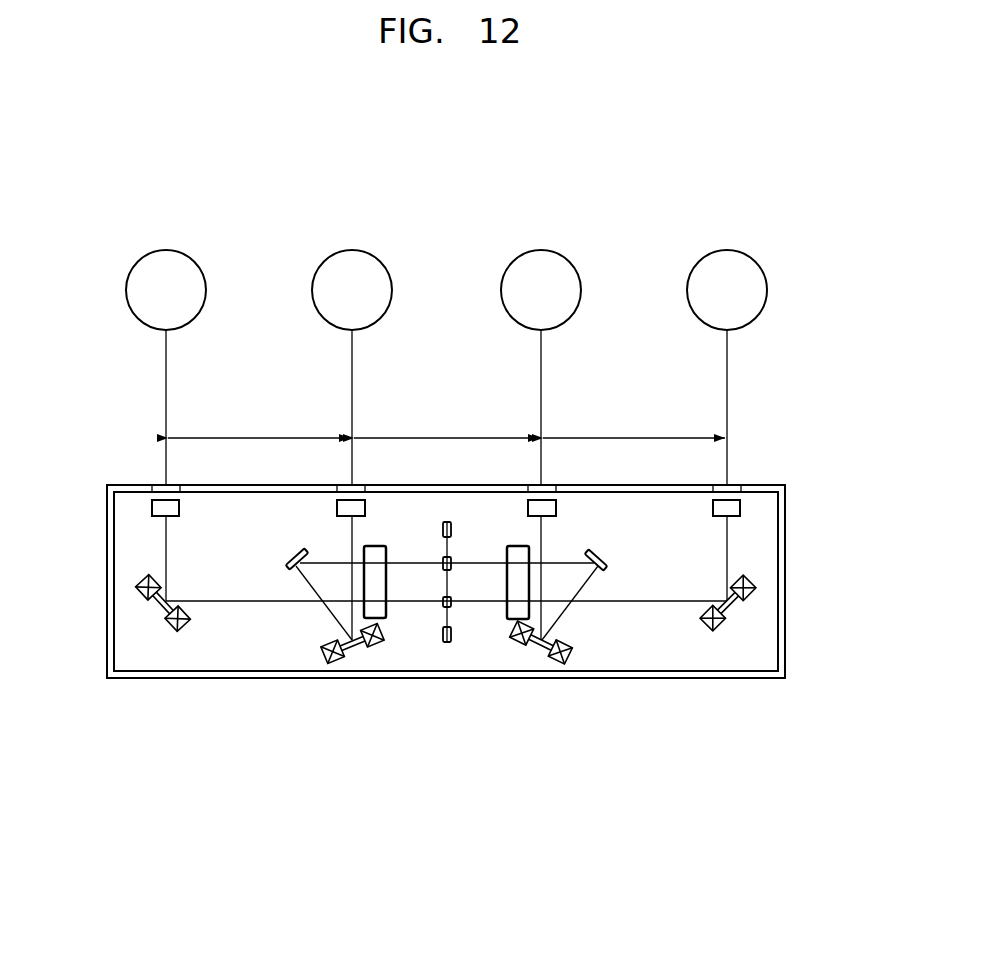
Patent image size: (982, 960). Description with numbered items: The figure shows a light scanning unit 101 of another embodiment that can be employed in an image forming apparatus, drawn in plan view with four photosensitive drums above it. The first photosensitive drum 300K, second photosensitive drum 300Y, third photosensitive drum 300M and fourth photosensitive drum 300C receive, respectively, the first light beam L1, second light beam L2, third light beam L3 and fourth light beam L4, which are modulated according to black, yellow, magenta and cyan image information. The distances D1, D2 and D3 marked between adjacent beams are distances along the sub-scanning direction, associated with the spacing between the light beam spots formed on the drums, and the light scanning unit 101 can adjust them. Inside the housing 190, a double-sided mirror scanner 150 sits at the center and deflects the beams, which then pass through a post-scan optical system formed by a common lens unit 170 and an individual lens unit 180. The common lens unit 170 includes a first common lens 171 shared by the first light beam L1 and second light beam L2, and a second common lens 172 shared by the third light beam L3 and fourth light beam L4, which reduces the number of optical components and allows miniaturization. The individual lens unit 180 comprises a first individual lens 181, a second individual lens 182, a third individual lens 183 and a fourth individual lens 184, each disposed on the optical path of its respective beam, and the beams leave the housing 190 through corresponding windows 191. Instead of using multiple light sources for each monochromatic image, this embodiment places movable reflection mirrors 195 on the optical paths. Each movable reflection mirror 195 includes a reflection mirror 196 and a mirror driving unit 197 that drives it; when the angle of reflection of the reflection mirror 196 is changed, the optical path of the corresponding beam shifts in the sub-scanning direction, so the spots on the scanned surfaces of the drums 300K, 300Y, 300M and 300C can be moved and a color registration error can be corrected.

The first photosensitive drum 300K is at (197, 264).
The second photosensitive drum 300Y is at (383, 264).
The third photosensitive drum 300M is at (572, 264).
The fourth photosensitive drum 300C is at (758, 264).
The first light beam L1 is at (164, 367).
The second light beam L2 is at (350, 367).
The third light beam L3 is at (539, 367).
The fourth light beam L4 is at (725, 367).
The distance along the sub-scanning direction D1 is at (259, 425).
The distance along the sub-scanning direction D2 is at (446, 425).
The distance along the sub-scanning direction D3 is at (634, 425).
The light scanning unit 101 is at (778, 463).
The individual lens unit 180 is at (99, 436).
The first individual lens 181 is at (150, 507).
The second individual lens 182 is at (336, 510).
The third individual lens 183 is at (527, 510).
The fourth individual lens 184 is at (712, 510).
The housing 190 is at (786, 540).
The window 191 is at (176, 487).
The common lens unit 170 is at (383, 741).
The first common lens 171 is at (382, 612).
The second common lens 172 is at (510, 622).
The double-sided mirror scanner 150 is at (447, 645).
The movable reflection mirror 195 is at (151, 617).
The reflection mirror 196 is at (186, 626).
The mirror driving unit 197 is at (146, 576).